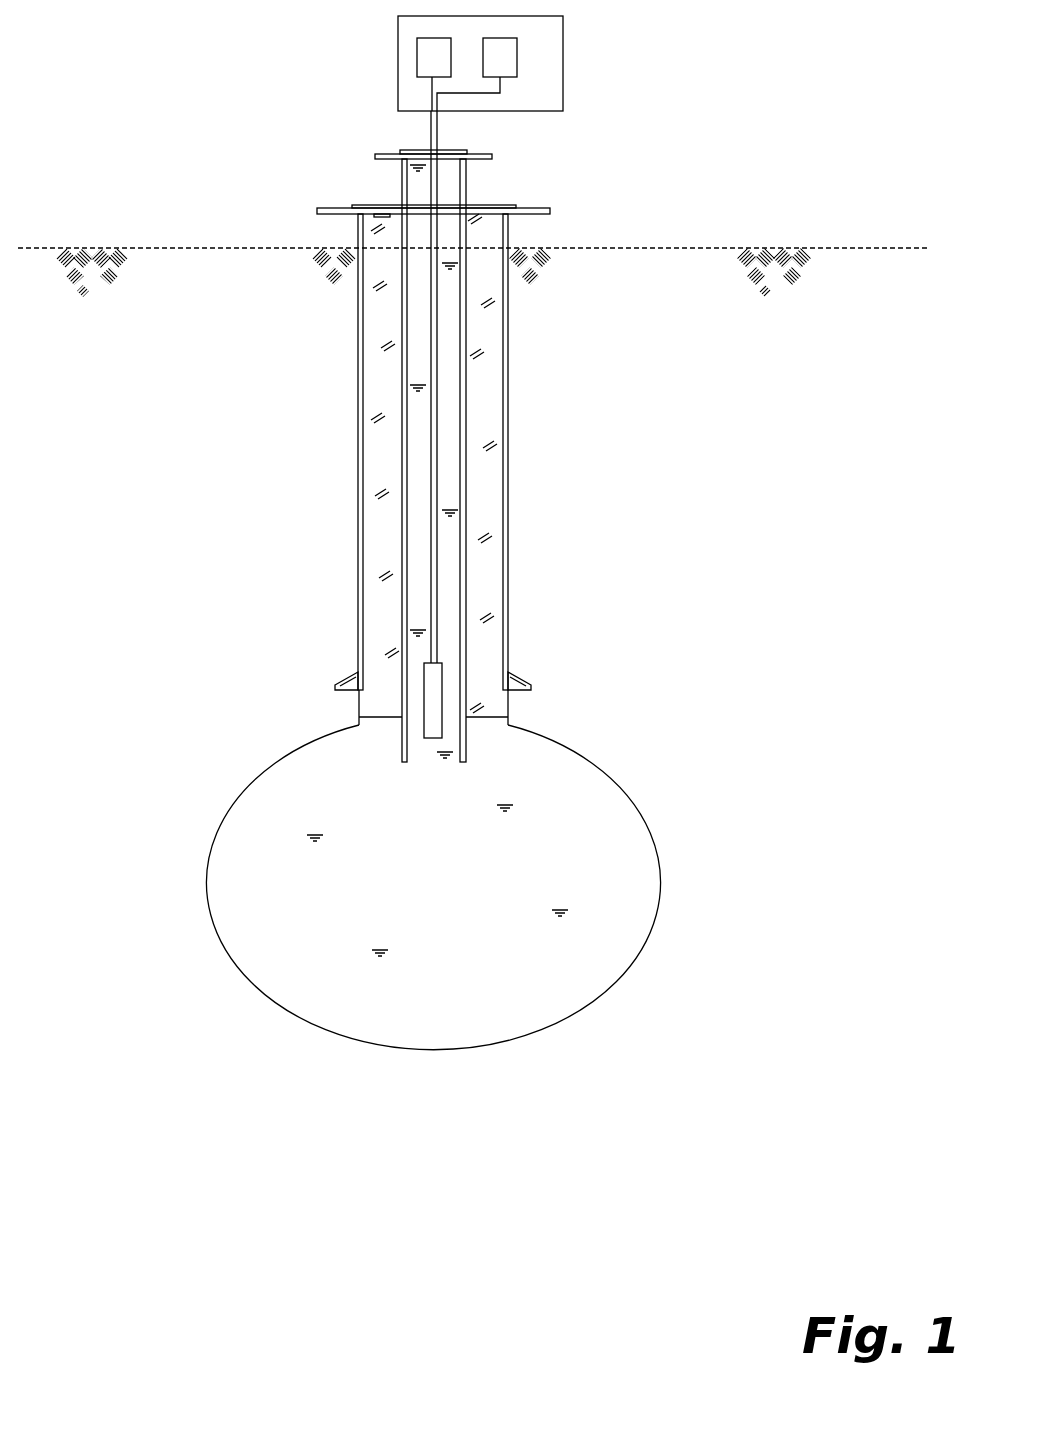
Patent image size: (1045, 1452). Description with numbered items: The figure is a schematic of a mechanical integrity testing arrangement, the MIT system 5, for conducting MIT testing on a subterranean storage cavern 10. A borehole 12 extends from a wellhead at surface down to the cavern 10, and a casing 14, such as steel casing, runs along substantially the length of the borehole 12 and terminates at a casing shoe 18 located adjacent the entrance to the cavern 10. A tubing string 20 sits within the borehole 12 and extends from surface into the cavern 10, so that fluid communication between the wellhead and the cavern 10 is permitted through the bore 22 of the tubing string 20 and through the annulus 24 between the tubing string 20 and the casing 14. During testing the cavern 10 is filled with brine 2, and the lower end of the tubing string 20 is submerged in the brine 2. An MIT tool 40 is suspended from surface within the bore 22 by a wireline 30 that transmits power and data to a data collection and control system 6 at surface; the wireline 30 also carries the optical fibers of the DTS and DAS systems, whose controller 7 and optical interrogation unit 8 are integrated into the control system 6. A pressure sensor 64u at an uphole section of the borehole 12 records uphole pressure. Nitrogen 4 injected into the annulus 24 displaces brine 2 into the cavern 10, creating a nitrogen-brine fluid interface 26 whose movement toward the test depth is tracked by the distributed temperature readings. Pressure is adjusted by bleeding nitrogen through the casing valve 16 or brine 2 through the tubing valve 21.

The brine 2 is at (640, 886).
The nitrogen 4 is at (382, 441).
The MIT system 5 is at (577, 195).
The data collection and control system 6 is at (563, 55).
The controller 7 is at (441, 70).
The optical interrogation unit 8 is at (507, 70).
The subterranean storage cavern 10 is at (449, 897).
The borehole 12 is at (508, 508).
The casing 14 is at (508, 570).
The casing valve 16 is at (370, 206).
The casing shoe 18 is at (534, 690).
The tubing string 20 is at (463, 368).
The tubing valve 21 is at (410, 151).
The bore 22 is at (450, 441).
The annulus 24 is at (382, 362).
The fluid interface 26 is at (477, 718).
The wireline 30 is at (430, 533).
The MIT tool 40 is at (425, 697).
The pressure sensor 64u is at (372, 213).